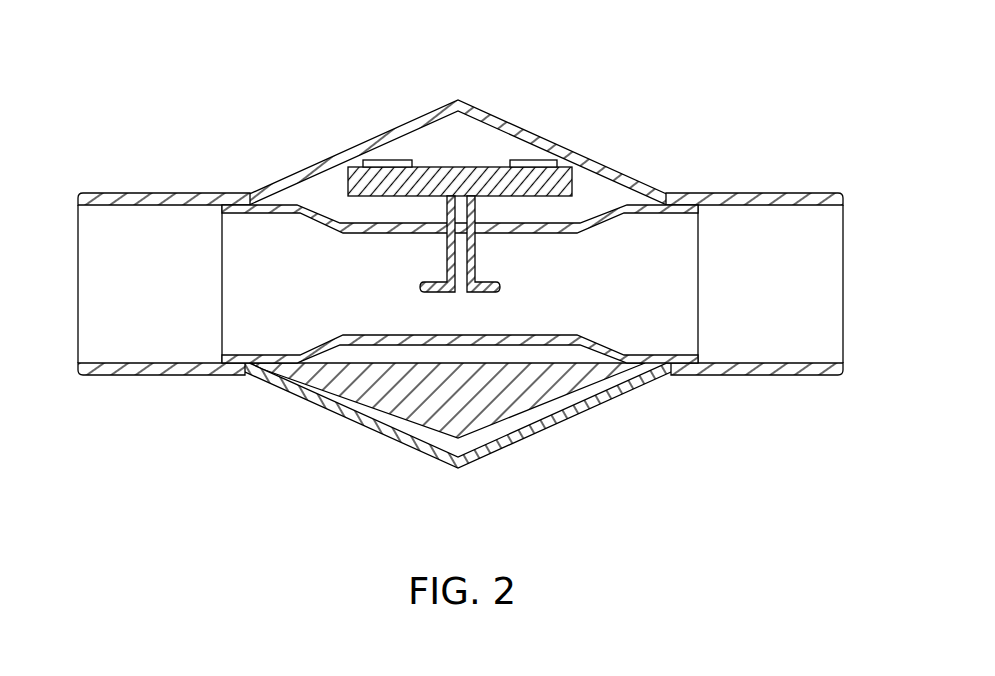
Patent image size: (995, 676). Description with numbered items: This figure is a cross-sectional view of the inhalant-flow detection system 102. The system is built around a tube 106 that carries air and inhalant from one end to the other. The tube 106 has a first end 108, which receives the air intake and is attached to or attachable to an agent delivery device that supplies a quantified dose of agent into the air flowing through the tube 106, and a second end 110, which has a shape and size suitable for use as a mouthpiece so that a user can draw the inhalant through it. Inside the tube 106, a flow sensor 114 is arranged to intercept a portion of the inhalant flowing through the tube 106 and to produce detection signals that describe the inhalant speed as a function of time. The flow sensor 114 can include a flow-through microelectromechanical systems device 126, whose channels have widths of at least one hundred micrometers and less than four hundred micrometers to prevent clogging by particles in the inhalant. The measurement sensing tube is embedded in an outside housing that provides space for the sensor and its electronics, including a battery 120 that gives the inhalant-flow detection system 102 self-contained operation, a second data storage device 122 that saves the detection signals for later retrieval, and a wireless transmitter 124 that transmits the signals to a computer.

The inhalant-flow detection system 102 is at (534, 77).
The tube 106 is at (160, 376).
The first end 108 is at (843, 287).
The second end 110 is at (78, 288).
The flow sensor 114 is at (432, 308).
The battery 120 is at (510, 418).
The second data storage device 122 is at (384, 160).
The wireless transmitter 124 is at (535, 160).
The flow-through microelectromechanical systems (MEMS) device 126 is at (462, 167).